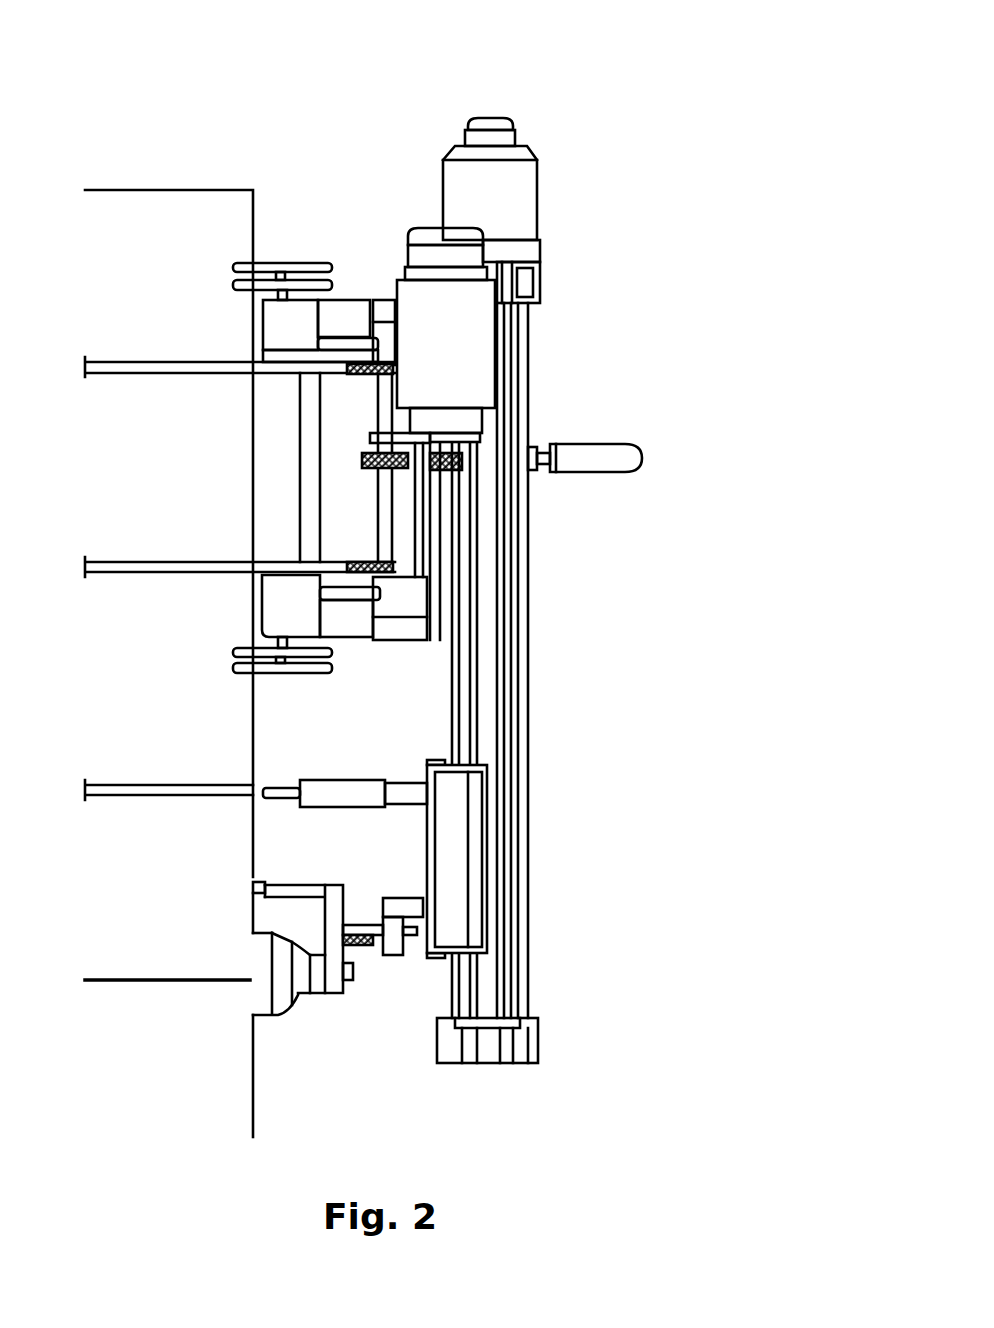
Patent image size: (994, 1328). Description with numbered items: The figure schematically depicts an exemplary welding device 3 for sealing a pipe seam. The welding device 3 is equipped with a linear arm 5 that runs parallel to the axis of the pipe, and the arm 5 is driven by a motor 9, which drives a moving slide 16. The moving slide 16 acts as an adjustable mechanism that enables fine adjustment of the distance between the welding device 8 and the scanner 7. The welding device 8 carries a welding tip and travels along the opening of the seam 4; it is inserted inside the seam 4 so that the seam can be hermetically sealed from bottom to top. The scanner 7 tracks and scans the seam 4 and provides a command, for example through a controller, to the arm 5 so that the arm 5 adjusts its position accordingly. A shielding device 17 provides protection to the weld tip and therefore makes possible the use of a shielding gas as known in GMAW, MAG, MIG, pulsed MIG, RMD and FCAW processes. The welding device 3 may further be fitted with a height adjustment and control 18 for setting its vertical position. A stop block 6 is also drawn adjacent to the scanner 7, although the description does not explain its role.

The welding device 3 is at (609, 662).
The seam 4 is at (114, 986).
The linear arm 5 is at (531, 864).
The stop block 6 is at (412, 789).
The scanner 7 is at (342, 791).
The welding device 8 is at (351, 976).
The motor 9 is at (517, 129).
The moving slide 16 is at (459, 829).
The shielding device 17 is at (291, 1004).
The height adjustment and control 18 is at (277, 889).